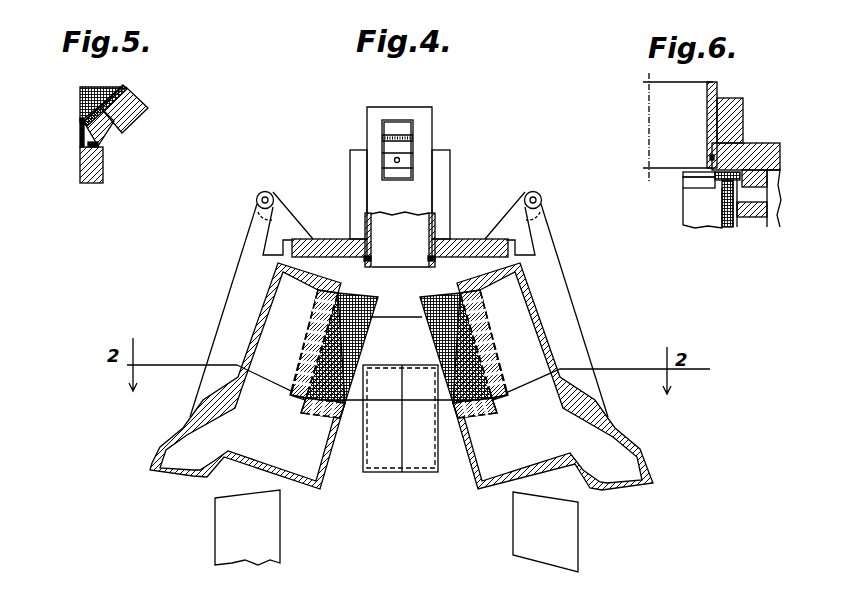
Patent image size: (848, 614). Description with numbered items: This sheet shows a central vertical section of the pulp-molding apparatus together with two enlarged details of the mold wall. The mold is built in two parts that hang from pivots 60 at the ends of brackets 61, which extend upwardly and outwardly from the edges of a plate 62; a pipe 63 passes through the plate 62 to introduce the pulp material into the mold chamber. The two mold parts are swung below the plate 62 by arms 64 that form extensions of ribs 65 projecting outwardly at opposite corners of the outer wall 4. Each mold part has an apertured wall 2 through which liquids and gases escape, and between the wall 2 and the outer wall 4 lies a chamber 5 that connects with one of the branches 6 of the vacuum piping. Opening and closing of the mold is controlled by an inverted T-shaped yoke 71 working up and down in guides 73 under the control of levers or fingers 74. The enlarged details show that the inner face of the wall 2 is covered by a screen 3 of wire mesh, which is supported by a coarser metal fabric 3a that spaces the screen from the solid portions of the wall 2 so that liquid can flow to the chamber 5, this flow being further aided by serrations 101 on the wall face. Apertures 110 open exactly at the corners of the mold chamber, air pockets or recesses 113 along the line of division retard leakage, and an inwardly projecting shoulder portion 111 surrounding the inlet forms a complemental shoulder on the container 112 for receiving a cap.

In FIG. 4, the levers or fingers 74 is at (395, 123).
In FIG. 4, the guides 73 is at (357, 160).
In FIG. 4, the pipe 63 is at (365, 218).
In FIG. 6, the pipe 63 is at (716, 92).
In FIG. 4, the plate 62 is at (465, 238).
In FIG. 6, the plate 62 is at (736, 116).
In FIG. 4, the brackets 61 is at (283, 219).
In FIG. 4, the pivots 60 is at (267, 192).
In FIG. 4, the arms 64 is at (250, 240).
In FIG. 4, the outer wall 4 is at (267, 290).
In FIG. 4, the apertured wall 2 is at (313, 312).
In FIG. 5, the apertured wall 2 is at (110, 112).
In FIG. 6, the apertured wall 2 is at (750, 214).
In FIG. 4, the ribs 65 is at (228, 318).
In FIG. 4, the chamber 5 is at (273, 358).
In FIG. 4, the branches 6 is at (220, 513).
In FIG. 4, the air pockets or recesses 113 is at (365, 258).
In FIG. 5, the air pockets or recesses 113 is at (80, 164).
In FIG. 6, the air pockets or recesses 113 is at (710, 157).
In FIG. 4, the inwardly projecting shoulder portion 111 is at (452, 292).
In FIG. 6, the inwardly projecting shoulder portion 111 is at (683, 181).
In FIG. 4, the inverted T-shaped yoke 71 is at (387, 318).
In FIG. 4, the screen 3 is at (440, 352).
In FIG. 5, the screen 3 is at (80, 104).
In FIG. 6, the screen 3 is at (727, 228).
In FIG. 4, the apertures 110 is at (300, 408).
In FIG. 6, the apertures 110 is at (762, 196).
In FIG. 4, the container 112 is at (423, 472).
In FIG. 6, the container 112 is at (697, 221).
In FIG. 5, the serrations 101 is at (124, 87).
In FIG. 6, the serrations 101 is at (746, 228).
In FIG. 5, the metal fabric 3a is at (100, 135).
In FIG. 6, the metal fabric 3a is at (735, 218).